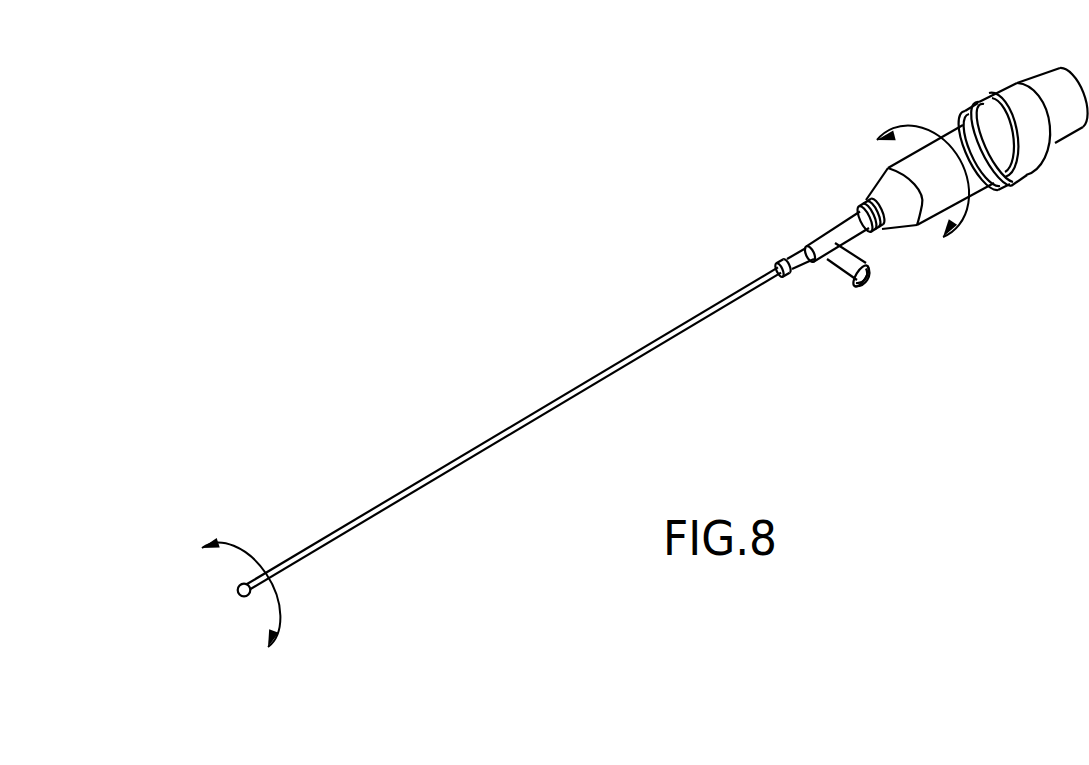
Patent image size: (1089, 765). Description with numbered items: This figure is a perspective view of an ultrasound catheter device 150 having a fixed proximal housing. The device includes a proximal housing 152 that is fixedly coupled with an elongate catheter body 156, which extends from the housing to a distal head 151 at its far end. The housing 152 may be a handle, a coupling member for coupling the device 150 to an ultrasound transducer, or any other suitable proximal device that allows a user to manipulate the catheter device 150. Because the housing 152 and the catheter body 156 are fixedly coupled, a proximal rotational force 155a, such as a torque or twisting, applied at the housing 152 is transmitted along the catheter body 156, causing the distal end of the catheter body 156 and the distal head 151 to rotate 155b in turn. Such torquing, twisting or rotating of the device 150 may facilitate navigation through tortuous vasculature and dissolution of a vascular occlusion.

The ultrasound catheter device 150 is at (517, 230).
The distal head 151 is at (240, 597).
The proximal housing 152 is at (924, 213).
The proximal rotational force 155a is at (915, 135).
The rotation of distal end and distal head 155b is at (257, 548).
The catheter body 156 is at (562, 410).